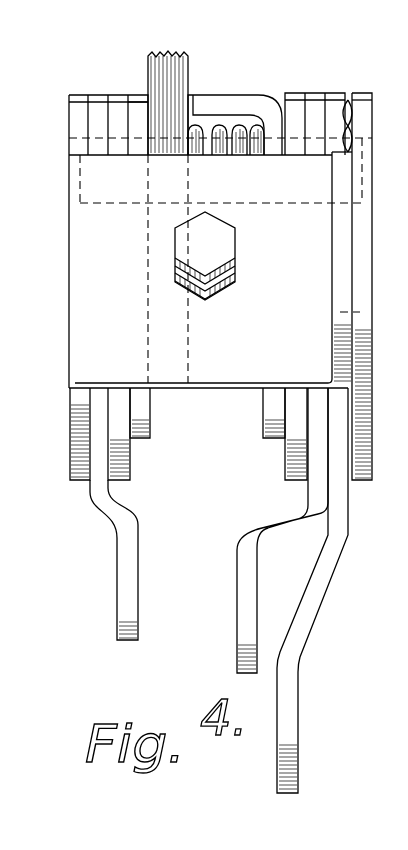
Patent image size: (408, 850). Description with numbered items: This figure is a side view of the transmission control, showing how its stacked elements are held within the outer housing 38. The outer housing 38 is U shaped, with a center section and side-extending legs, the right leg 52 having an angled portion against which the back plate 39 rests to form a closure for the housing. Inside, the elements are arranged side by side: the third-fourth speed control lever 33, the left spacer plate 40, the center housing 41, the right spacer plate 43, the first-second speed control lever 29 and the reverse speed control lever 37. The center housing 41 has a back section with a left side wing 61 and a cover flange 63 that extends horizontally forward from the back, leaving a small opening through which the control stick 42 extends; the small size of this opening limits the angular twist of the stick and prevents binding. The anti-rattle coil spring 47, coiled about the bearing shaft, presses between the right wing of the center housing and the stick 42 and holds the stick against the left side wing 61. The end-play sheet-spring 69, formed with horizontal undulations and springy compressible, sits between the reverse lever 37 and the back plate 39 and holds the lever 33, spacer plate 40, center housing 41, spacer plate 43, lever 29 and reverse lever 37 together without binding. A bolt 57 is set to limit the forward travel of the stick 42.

The first-second speed control lever 29 is at (315, 95).
The third-fourth speed control lever 33 is at (130, 555).
The reverse speed control lever 37 is at (338, 96).
The outer housing 38 is at (70, 312).
The back plate 39 is at (372, 290).
The left spacer plate 40 is at (115, 93).
The center housing 41 is at (244, 98).
The control stick 42 is at (168, 53).
The right spacer plate 43 is at (292, 93).
The anti-rattle coil spring 47 is at (203, 93).
The right leg 52 is at (218, 367).
The bolt 57 is at (224, 247).
The left side wing 61 is at (135, 93).
The cover flange 63 is at (223, 98).
The end-play sheet-spring 69 is at (353, 93).